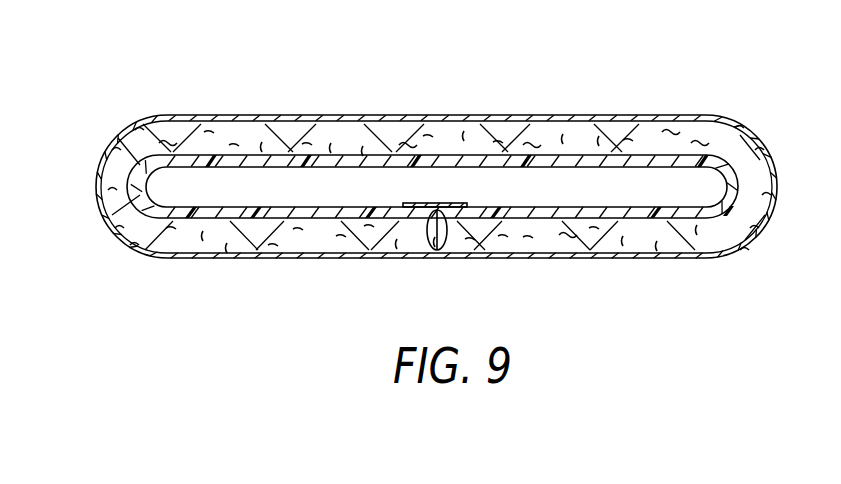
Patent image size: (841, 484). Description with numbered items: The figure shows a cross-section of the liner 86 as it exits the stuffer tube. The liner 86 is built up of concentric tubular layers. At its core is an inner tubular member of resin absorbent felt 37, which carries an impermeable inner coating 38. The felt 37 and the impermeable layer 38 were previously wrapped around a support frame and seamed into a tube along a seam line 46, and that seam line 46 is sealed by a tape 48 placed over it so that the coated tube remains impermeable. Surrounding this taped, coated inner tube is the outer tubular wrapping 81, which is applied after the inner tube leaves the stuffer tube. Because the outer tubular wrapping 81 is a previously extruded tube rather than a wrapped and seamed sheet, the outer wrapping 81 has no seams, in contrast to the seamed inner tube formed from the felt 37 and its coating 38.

The liner 86 is at (432, 178).
The outer tubular wrapping 81 is at (201, 140).
The felt 37 is at (143, 242).
The impermeable layer 38 is at (285, 205).
The tape 48 is at (412, 207).
The seam line 46 is at (448, 240).